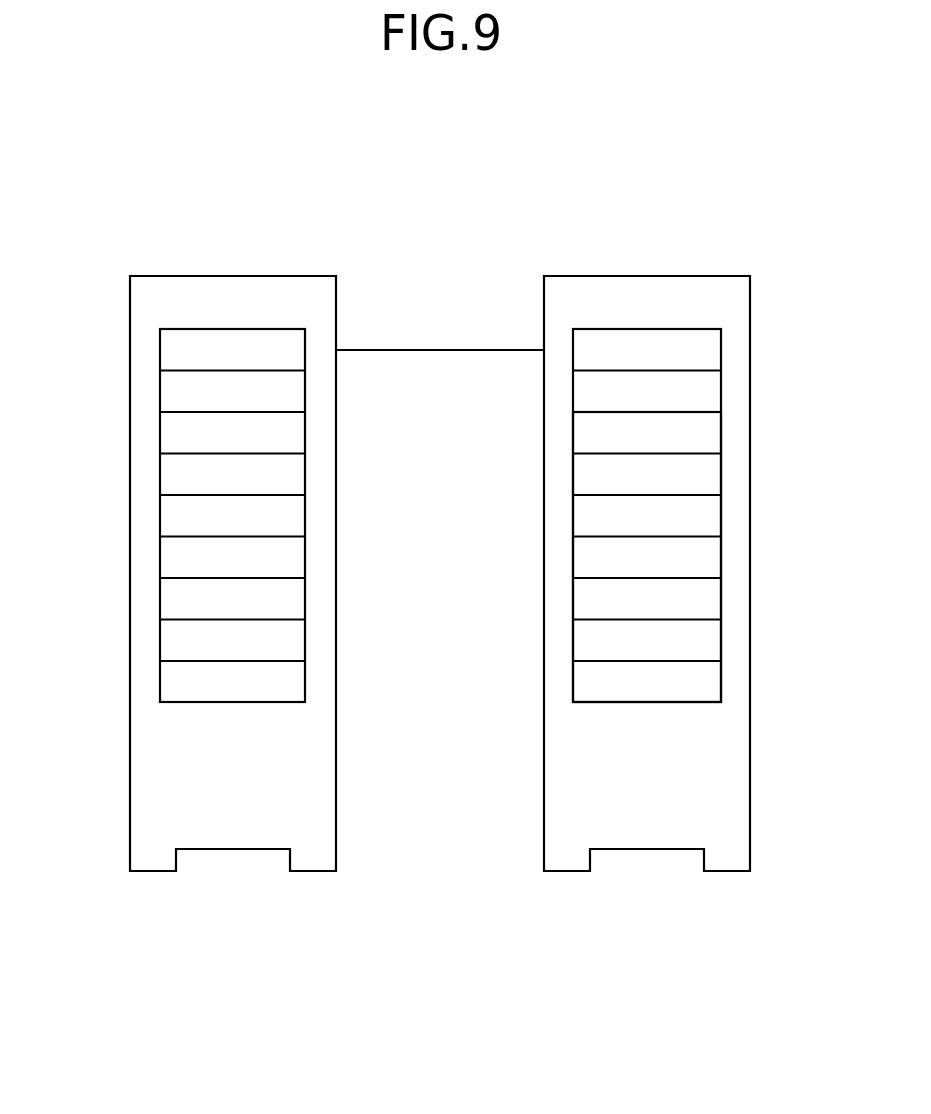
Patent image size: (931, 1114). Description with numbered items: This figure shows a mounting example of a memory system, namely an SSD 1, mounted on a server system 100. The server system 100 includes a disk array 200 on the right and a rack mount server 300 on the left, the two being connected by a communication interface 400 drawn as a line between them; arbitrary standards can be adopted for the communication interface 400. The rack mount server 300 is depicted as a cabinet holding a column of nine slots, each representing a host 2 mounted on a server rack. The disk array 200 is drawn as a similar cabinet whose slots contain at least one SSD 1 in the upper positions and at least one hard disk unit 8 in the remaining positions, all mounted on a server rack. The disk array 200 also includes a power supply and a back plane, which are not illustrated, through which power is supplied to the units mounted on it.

The server system 100 is at (671, 182).
The disk array 200 is at (686, 276).
The rack mount server 300 is at (272, 276).
The communication interface 400 is at (443, 351).
The SSD 1 is at (721, 349).
The host 2 is at (160, 349).
The hard disk unit 8 is at (721, 432).